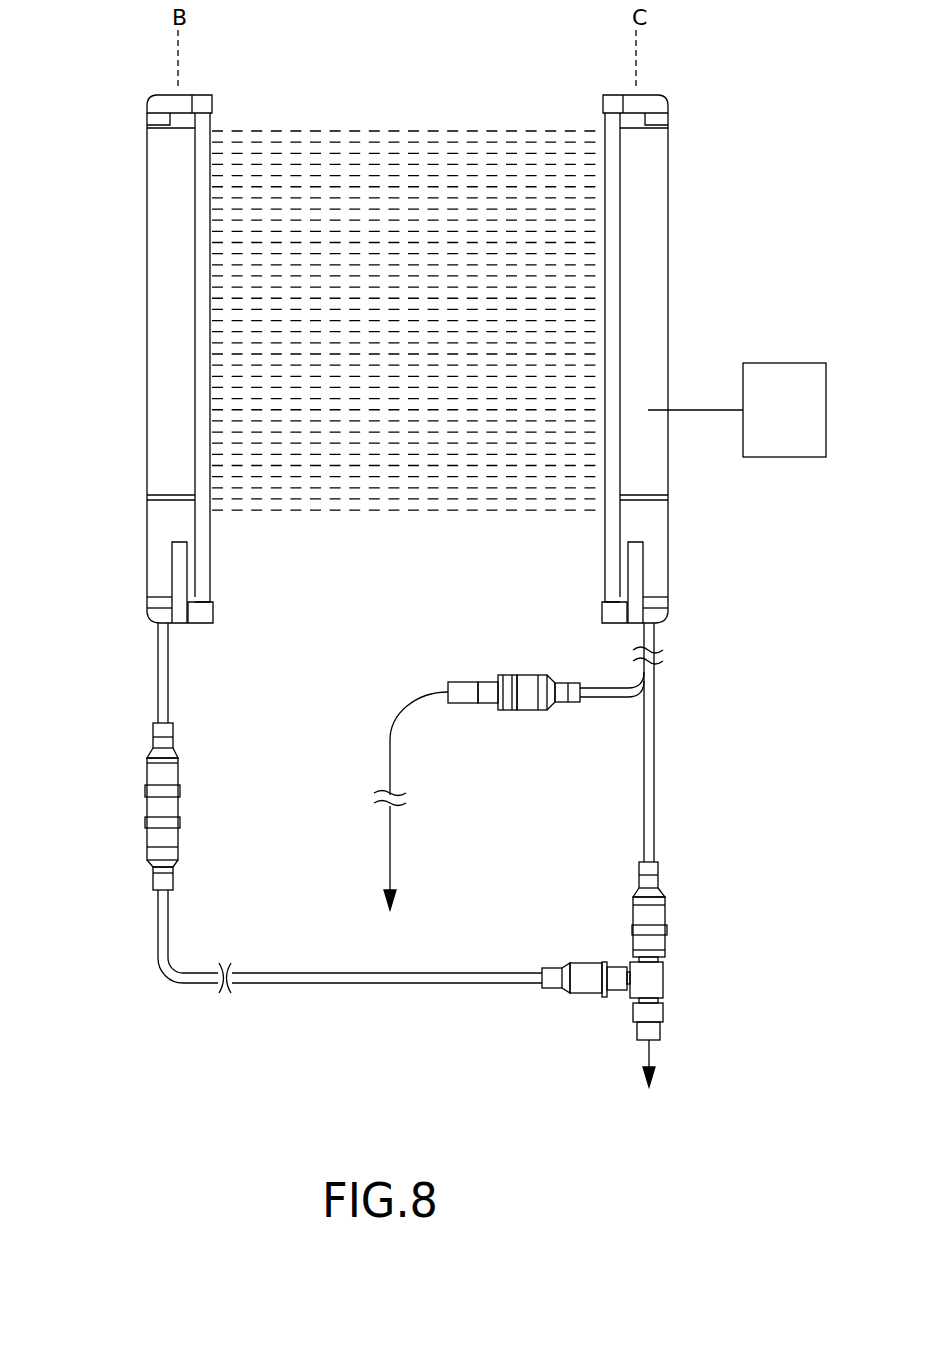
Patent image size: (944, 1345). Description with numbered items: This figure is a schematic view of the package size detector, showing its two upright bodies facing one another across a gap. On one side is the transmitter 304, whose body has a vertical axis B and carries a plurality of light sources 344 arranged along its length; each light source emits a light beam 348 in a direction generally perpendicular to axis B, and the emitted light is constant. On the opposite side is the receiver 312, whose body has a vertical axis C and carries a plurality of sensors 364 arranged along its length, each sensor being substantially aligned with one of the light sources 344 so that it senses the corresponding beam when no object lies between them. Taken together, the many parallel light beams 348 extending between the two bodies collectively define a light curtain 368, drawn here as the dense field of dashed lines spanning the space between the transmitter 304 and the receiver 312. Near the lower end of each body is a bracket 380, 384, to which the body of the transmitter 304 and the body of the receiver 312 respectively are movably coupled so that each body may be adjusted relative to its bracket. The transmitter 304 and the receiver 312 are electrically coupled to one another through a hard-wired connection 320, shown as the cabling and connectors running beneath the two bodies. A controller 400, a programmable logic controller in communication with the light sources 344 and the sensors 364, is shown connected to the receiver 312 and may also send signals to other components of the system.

The transmitter 304 is at (165, 240).
The receiver 312 is at (647, 243).
The light sources 344 is at (213, 150).
The light beam 348 is at (321, 150).
The sensors 364 is at (598, 150).
The light curtain 368 is at (424, 96).
The bracket 380 is at (200, 515).
The bracket 384 is at (612, 533).
The controller 400 is at (802, 425).
The hard-wired connection 320 is at (358, 1042).